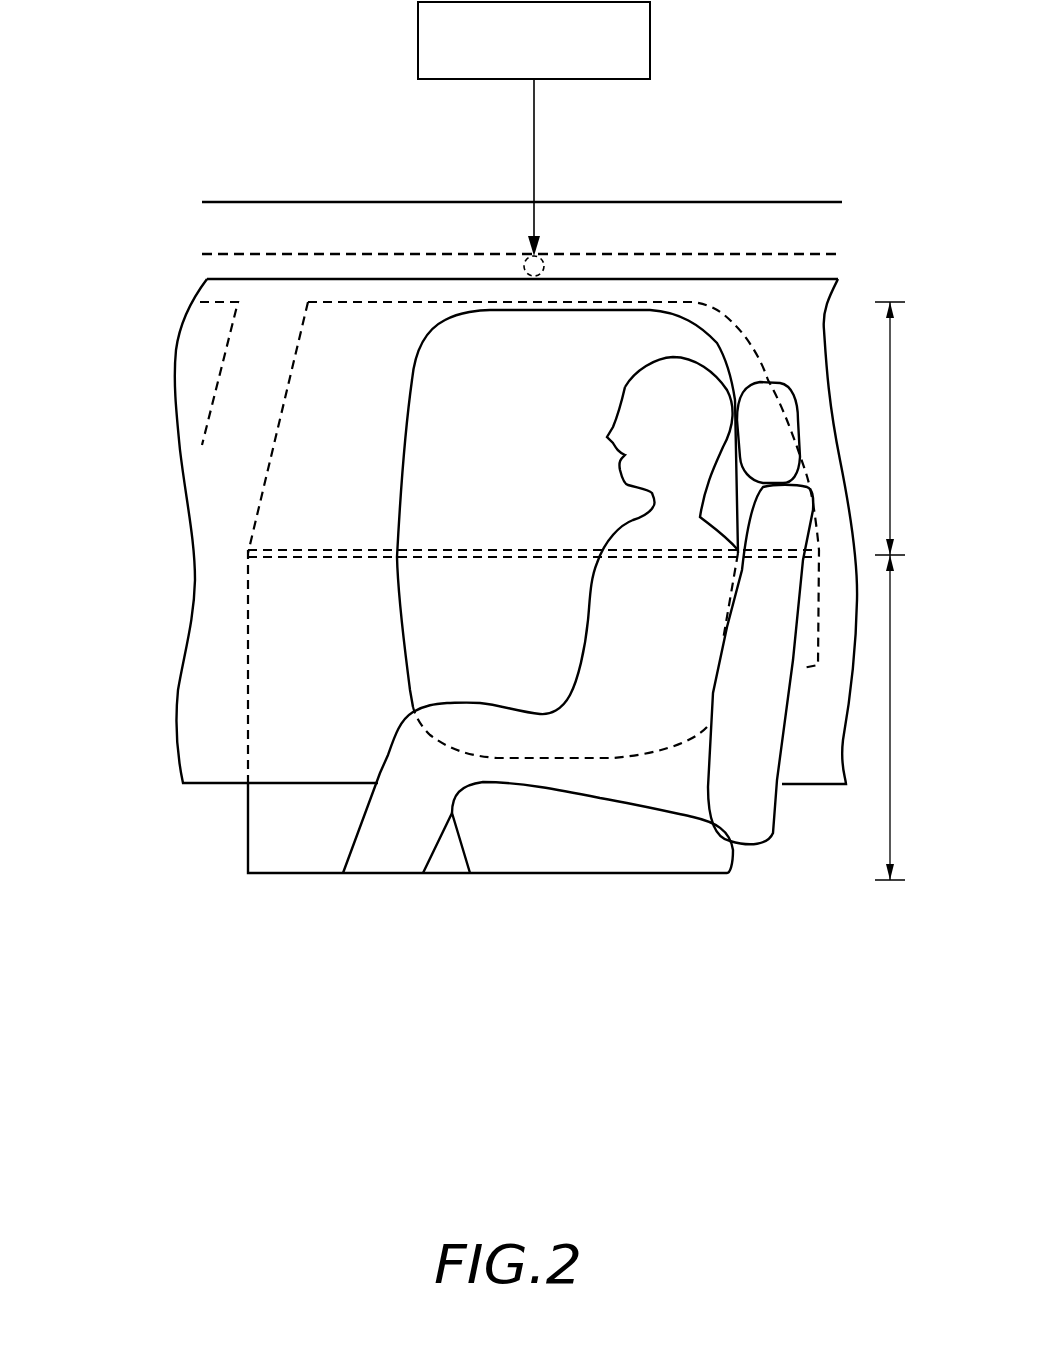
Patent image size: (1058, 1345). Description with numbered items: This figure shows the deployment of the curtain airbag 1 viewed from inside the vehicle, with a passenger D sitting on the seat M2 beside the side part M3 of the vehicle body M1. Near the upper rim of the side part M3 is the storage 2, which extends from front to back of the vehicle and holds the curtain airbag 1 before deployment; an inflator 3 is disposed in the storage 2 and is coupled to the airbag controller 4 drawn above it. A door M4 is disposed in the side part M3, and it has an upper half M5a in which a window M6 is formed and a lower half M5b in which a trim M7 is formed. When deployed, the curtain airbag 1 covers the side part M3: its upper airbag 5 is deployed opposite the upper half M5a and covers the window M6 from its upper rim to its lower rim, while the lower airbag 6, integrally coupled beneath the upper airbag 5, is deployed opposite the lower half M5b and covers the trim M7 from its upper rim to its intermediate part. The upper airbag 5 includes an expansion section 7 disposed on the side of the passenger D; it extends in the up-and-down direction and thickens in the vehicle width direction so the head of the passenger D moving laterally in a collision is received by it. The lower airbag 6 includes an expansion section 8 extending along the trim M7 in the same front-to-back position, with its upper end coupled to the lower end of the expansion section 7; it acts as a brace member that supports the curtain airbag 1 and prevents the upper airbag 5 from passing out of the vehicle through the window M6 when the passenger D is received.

The curtain airbag 1 is at (247, 278).
The storage 2 is at (693, 254).
The inflator 3 is at (543, 258).
The airbag controller 4 is at (650, 42).
The upper airbag 5 is at (227, 443).
The lower airbag 6 is at (227, 730).
The expansion section 7 is at (527, 360).
The expansion section 8 is at (527, 648).
The passenger D is at (703, 362).
The vehicle body M1 is at (292, 202).
The seat M2 is at (794, 405).
The side part M3 is at (108, 400).
The door M4 is at (105, 472).
The upper half M5a is at (920, 428).
The lower half M5b is at (921, 717).
The window M6 is at (310, 497).
The trim M7 is at (303, 605).